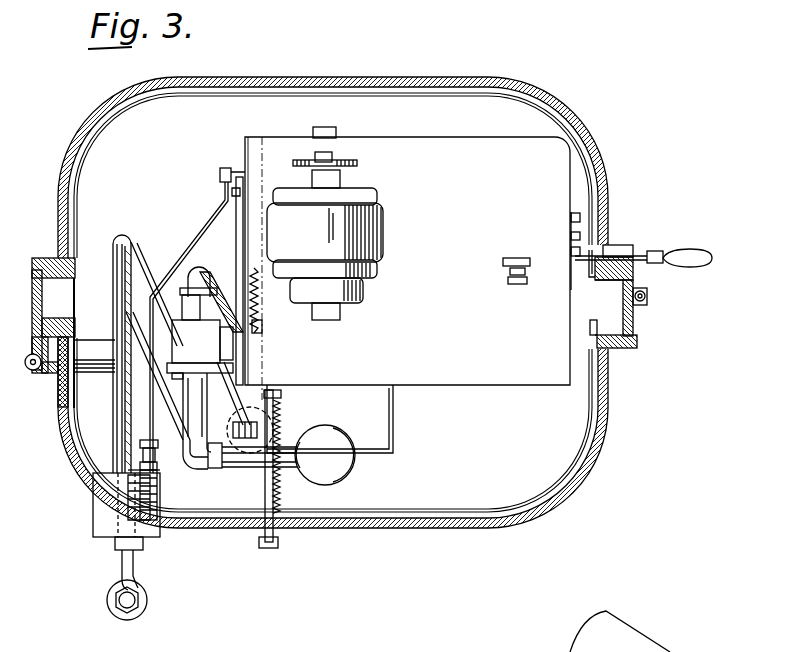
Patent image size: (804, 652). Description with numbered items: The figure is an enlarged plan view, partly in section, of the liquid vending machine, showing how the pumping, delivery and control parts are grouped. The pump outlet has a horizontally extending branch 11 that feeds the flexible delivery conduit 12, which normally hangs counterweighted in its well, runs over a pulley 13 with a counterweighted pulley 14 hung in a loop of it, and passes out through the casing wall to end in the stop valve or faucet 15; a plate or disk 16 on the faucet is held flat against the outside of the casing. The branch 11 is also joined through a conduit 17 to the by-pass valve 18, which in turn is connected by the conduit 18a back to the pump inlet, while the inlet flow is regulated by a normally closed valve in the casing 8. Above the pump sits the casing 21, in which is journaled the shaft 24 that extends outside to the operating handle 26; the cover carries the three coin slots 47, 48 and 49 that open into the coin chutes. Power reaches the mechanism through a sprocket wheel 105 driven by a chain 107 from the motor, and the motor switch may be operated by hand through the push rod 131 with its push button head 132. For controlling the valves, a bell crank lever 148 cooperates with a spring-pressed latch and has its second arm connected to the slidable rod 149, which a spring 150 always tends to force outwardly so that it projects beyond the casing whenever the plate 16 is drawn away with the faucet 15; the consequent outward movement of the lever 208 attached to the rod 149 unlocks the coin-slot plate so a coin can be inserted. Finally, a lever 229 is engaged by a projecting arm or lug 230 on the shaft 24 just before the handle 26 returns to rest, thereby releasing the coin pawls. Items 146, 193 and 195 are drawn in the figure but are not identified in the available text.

The valve casing 8 is at (234, 423).
The horizontally extending branch 11 is at (222, 470).
The flexible delivery conduit 12 is at (120, 308).
The pulley 13 is at (115, 411).
The counterweighted pulley 14 is at (176, 406).
The stop valve or faucet 15 is at (142, 597).
The plate or disk 16 is at (97, 540).
The conduit 17 is at (200, 472).
The by-pass valve 18 is at (200, 378).
The conduit 18a is at (203, 289).
The casing 21 is at (455, 389).
The shaft 24 is at (584, 266).
The operating handle 26 is at (685, 257).
The coin slot 47 is at (510, 281).
The coin slot 48 is at (506, 272).
The coin slot 49 is at (515, 262).
The sprocket wheel 105 is at (325, 223).
The chain 107 is at (340, 163).
The push rod 131 is at (266, 492).
The push button head 132 is at (270, 544).
The plunger 146 is at (244, 267).
The bell crank lever 148 is at (241, 226).
The slidable rod 149 is at (188, 253).
The spring 150 is at (155, 497).
The spring 193 is at (252, 359).
The link 195 is at (236, 392).
The lever 208 is at (130, 471).
The lever 229 is at (570, 220).
The projecting arm or lug 230 is at (570, 249).